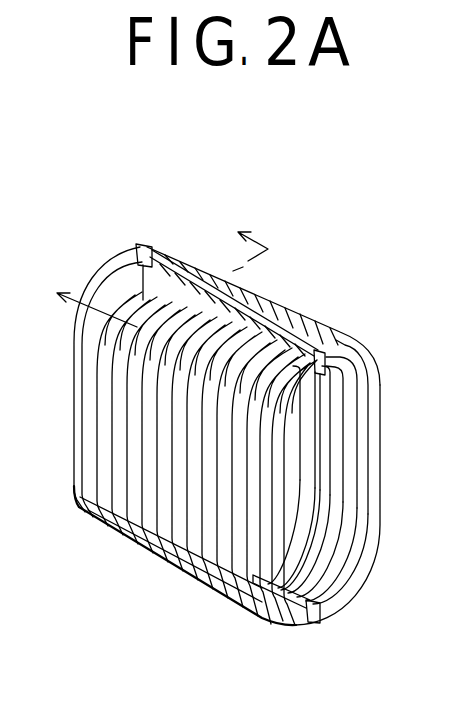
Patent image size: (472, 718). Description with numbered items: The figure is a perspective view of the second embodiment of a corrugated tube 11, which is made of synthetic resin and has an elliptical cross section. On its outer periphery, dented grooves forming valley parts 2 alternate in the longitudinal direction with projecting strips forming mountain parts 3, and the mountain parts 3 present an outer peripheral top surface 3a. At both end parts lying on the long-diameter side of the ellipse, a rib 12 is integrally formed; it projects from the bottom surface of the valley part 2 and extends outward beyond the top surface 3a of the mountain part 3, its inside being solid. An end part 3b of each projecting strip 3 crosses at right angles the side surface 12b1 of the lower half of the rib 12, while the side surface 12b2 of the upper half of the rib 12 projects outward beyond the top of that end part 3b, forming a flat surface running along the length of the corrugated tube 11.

The corrugated tube 11 is at (368, 209).
The dented groove (valley part) 2 is at (253, 345).
The projecting strip (mountain part) 3 is at (128, 312).
The outer peripheral surface (top surface) of the mountain part 3a is at (127, 318).
The end part of the projecting strip 3b is at (168, 262).
The rib 12 is at (143, 243).
The side surface of the lower half part of the rib 12b1 is at (143, 283).
The side surface of the upper half part of the rib 12b2 is at (186, 258).